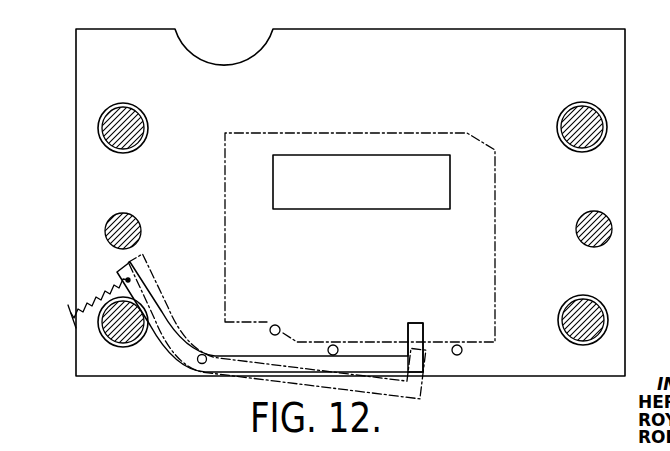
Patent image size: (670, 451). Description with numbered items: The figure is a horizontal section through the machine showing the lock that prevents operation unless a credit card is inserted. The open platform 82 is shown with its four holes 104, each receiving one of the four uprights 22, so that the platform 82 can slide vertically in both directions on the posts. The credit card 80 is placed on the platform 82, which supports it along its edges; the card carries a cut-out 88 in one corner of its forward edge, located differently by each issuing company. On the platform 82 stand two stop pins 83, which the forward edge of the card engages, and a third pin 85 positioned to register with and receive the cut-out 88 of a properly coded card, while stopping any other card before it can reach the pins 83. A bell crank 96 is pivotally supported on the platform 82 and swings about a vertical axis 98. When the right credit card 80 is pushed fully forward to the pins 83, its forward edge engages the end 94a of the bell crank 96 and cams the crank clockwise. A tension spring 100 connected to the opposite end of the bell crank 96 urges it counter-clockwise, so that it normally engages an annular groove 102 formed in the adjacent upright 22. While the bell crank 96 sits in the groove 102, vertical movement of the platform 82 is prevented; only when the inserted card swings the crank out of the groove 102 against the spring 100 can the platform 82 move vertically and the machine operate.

The upright 22 is at (578, 110).
The credit card 80 is at (480, 283).
The platform 82 is at (622, 182).
The stop pin 83 is at (335, 345).
The pin 85 is at (277, 325).
The cut-out 88 is at (264, 327).
The end of bell crank 94a is at (419, 322).
The bell crank 96 is at (173, 353).
The vertical axis 98 is at (202, 364).
The tension spring 100 is at (98, 300).
The annular groove 102 is at (133, 333).
The hole 104 is at (139, 152).